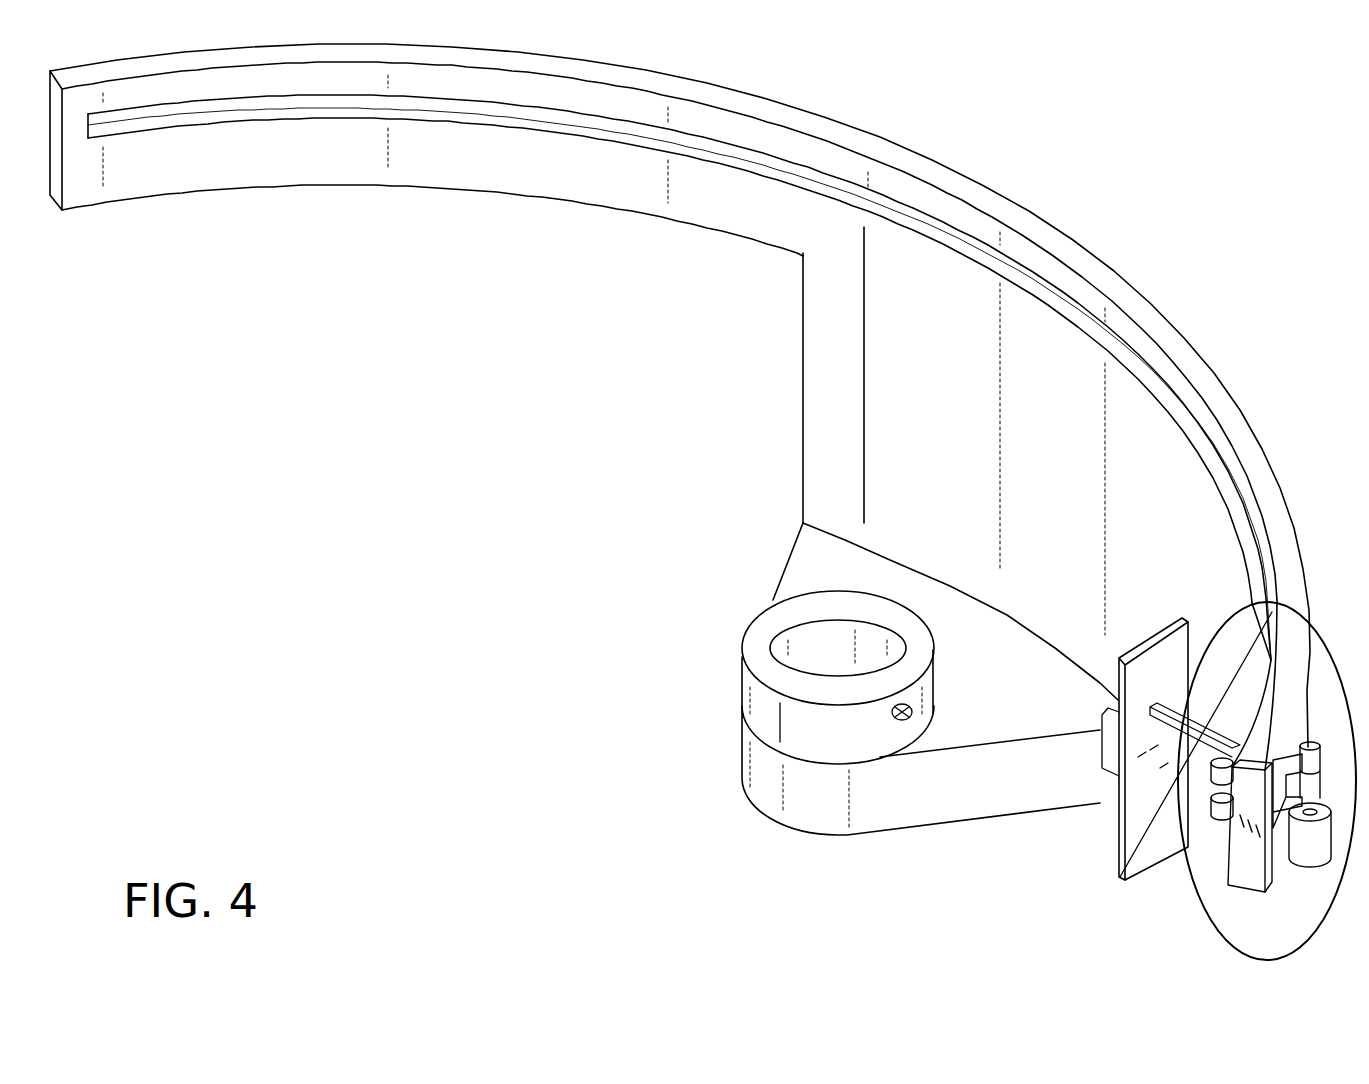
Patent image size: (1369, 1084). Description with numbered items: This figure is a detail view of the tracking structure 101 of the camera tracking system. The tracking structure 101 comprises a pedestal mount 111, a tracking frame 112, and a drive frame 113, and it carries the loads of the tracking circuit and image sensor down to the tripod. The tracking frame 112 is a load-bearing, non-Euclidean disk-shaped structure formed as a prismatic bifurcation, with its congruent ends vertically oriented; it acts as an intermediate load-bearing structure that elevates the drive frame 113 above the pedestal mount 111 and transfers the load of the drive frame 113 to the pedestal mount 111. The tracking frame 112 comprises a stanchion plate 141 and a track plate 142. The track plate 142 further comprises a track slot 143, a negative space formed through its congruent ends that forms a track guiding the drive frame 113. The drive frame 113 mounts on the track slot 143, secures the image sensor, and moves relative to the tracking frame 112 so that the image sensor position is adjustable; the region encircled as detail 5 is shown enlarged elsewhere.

The tracking structure 101 is at (680, 407).
The pedestal mount 111 is at (812, 798).
The tracking frame 112 is at (666, 421).
The drive frame 113 is at (1120, 873).
The stanchion plate 141 is at (825, 422).
The track plate 142 is at (720, 205).
The track slot 143 is at (617, 140).
The camera module 5 is at (1205, 915).